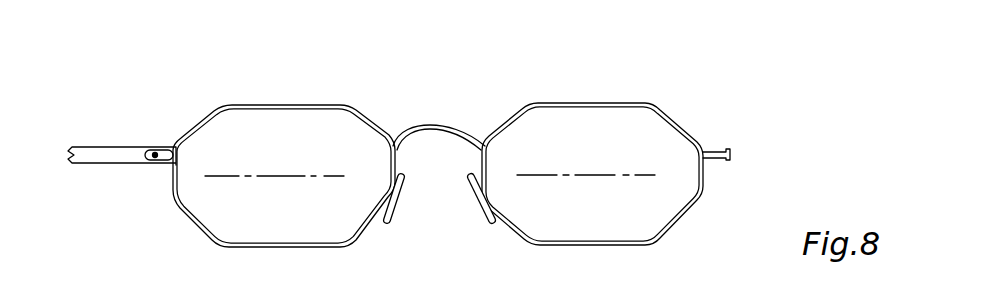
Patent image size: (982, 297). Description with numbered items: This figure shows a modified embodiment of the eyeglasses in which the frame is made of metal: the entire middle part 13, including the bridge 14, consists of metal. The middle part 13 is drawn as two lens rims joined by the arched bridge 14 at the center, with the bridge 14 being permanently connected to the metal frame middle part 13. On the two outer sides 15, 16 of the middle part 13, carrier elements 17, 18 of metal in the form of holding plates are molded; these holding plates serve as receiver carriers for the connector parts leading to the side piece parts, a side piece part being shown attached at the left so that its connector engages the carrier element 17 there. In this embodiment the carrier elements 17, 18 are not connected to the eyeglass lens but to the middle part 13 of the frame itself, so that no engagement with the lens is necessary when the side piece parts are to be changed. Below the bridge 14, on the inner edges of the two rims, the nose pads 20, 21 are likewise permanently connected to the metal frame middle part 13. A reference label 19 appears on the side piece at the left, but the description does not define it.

The middle part 13 is at (485, 88).
The bridge 14 is at (430, 128).
The outer side 15 is at (172, 180).
The outer side 16 is at (703, 185).
The carrier element 17 is at (155, 153).
The carrier element 18 is at (718, 149).
The temple 19 is at (103, 157).
The nose pad 20 is at (392, 212).
The nose pad 21 is at (482, 208).